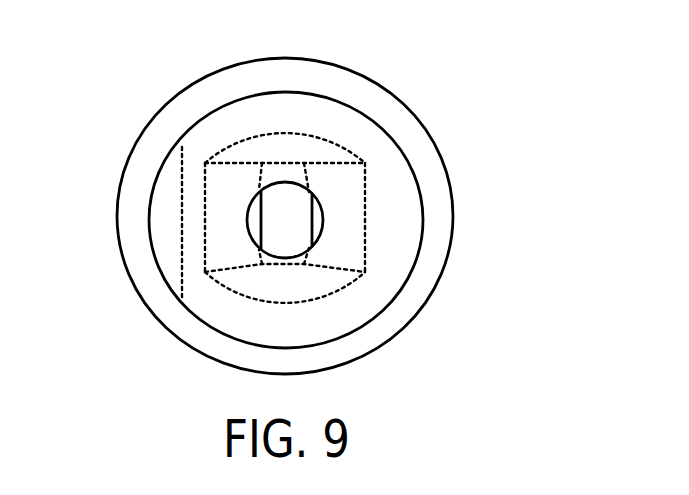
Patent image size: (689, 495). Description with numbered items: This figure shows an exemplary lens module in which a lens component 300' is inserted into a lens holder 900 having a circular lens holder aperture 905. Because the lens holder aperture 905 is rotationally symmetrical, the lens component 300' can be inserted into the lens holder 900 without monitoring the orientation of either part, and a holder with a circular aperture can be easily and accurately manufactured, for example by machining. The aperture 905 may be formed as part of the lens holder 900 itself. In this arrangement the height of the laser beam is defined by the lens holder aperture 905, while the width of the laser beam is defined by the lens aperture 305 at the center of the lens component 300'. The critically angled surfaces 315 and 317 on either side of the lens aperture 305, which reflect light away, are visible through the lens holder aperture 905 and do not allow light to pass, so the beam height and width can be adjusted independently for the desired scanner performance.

The lens holder 900 is at (285, 201).
The lens component 300' is at (312, 192).
The lens holder aperture 905 is at (208, 218).
The lens aperture 305 is at (303, 229).
The critically angled surface 315 is at (154, 264).
The critically angled surface 317 is at (413, 269).